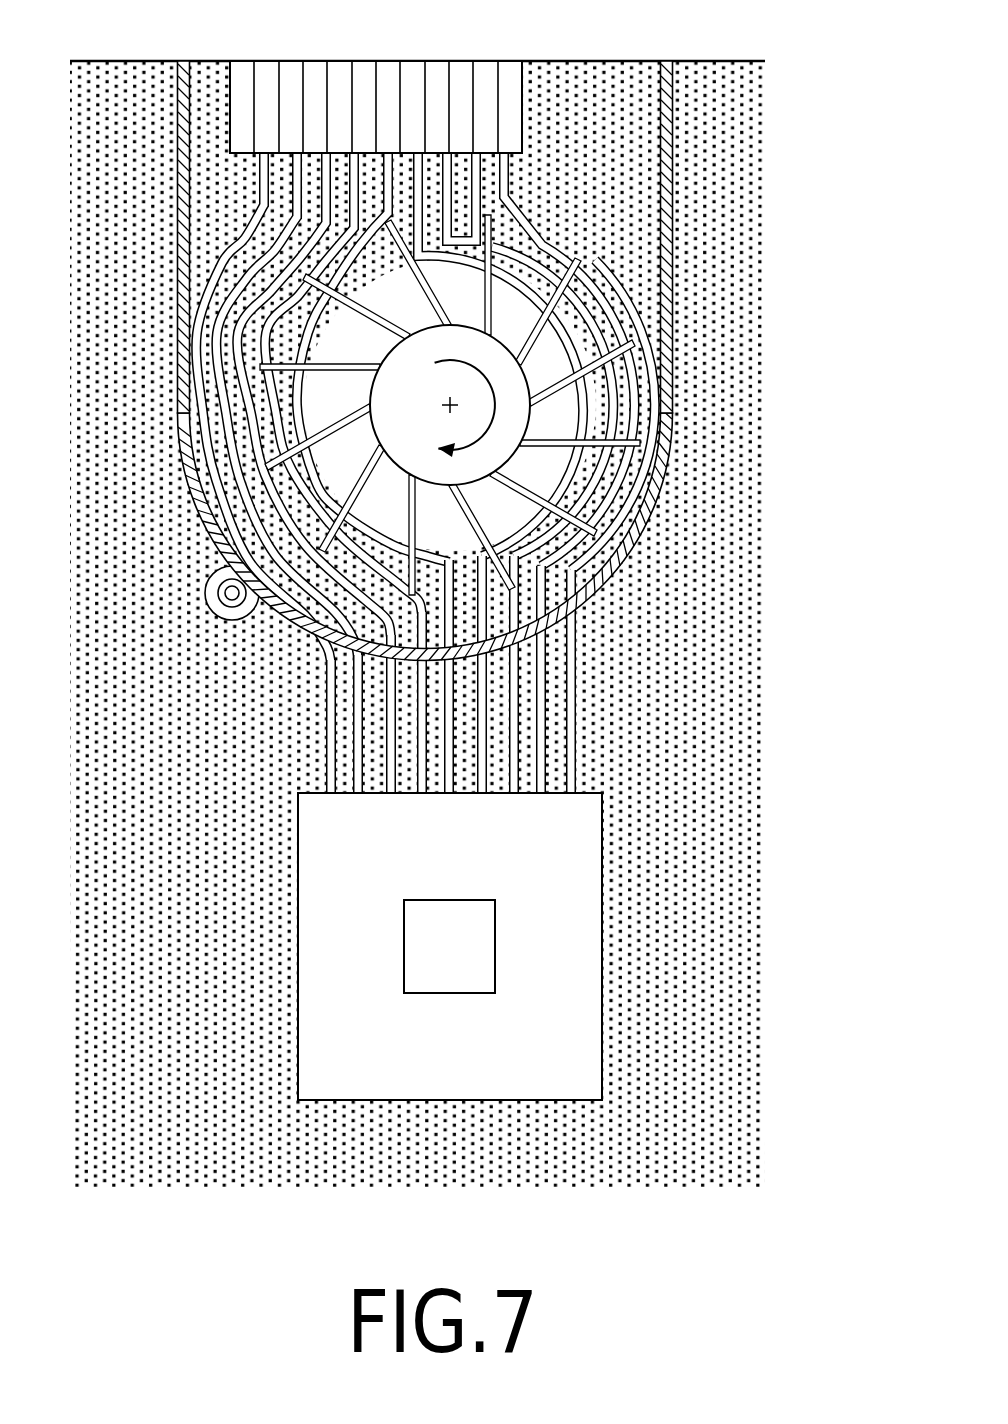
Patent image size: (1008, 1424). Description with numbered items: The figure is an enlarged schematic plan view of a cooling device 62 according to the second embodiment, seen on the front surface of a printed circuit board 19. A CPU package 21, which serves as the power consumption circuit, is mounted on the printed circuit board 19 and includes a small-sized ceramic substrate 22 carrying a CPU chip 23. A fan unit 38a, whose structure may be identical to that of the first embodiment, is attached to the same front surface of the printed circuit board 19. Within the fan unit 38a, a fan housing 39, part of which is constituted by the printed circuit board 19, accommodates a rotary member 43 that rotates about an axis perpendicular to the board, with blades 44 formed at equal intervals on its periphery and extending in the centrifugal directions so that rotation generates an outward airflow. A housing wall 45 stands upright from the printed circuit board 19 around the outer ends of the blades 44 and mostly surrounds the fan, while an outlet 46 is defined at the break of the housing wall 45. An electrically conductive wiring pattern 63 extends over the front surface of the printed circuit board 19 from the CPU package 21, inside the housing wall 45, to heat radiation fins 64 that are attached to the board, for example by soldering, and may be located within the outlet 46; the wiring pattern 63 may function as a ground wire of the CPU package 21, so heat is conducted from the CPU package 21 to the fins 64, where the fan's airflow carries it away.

The printed circuit board 19 is at (153, 61).
The CPU package 21 is at (605, 987).
The ceramic substrate 22 is at (601, 840).
The CPU chip 23 is at (495, 921).
The fan unit 38a is at (726, 318).
The fan housing 39 is at (650, 518).
The rotary member 43 is at (528, 408).
The blades 44 is at (490, 208).
The housing wall 45 is at (199, 485).
The outlet 46 is at (645, 70).
The cooling device 62 is at (632, 632).
The electrically conductive wiring pattern 63 is at (326, 702).
The heat radiation fins 64 is at (487, 60).